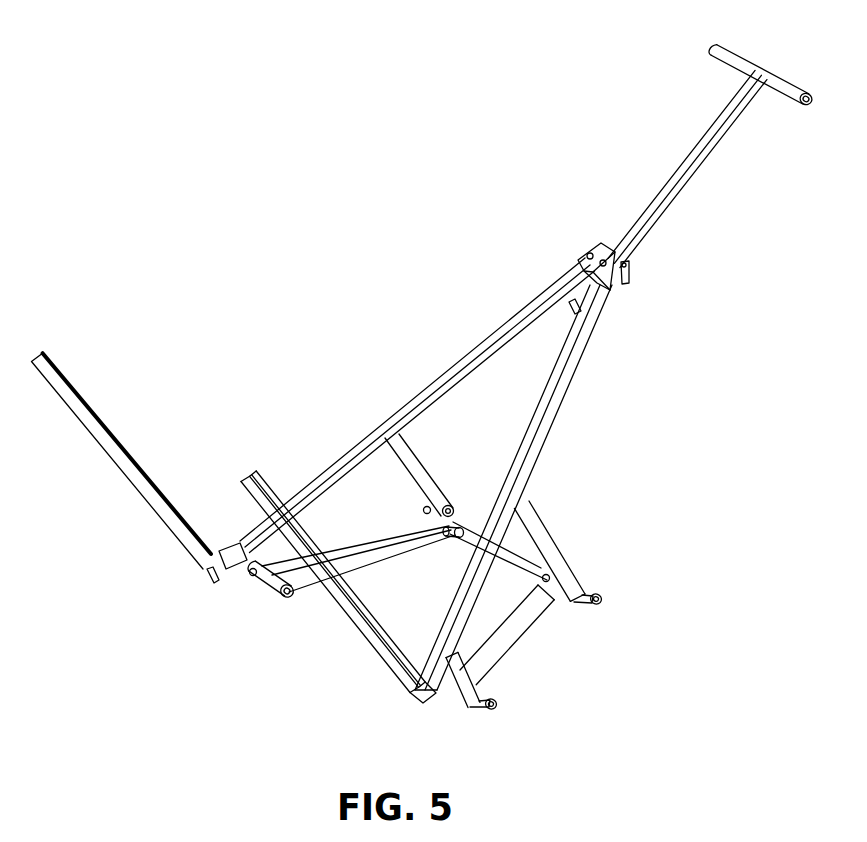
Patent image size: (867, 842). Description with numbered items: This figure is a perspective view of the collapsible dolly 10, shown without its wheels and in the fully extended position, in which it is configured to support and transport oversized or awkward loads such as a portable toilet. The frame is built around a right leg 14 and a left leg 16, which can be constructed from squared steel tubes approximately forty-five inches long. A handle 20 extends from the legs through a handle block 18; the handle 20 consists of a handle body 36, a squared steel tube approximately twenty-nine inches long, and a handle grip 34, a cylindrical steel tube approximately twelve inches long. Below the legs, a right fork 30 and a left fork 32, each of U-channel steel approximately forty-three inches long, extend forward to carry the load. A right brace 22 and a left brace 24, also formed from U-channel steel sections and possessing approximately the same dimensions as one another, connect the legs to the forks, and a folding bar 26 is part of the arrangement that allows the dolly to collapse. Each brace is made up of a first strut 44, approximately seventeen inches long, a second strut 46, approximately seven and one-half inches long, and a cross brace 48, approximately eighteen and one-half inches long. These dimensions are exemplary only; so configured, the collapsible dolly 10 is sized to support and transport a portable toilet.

The collapsible dolly 10 is at (435, 123).
The right leg 14 is at (437, 385).
The left leg 16 is at (537, 446).
The handle block 18 is at (619, 276).
The handle 20 is at (628, 162).
The right brace 22 is at (385, 556).
The left brace 24 is at (572, 497).
The folding bar 26 is at (466, 522).
The right fork 30 is at (62, 388).
The left fork 32 is at (340, 598).
The handle grip 34 is at (740, 63).
The handle body 36 is at (703, 161).
The first strut 44 is at (560, 568).
The second strut 46 is at (455, 680).
The cross brace 48 is at (540, 617).